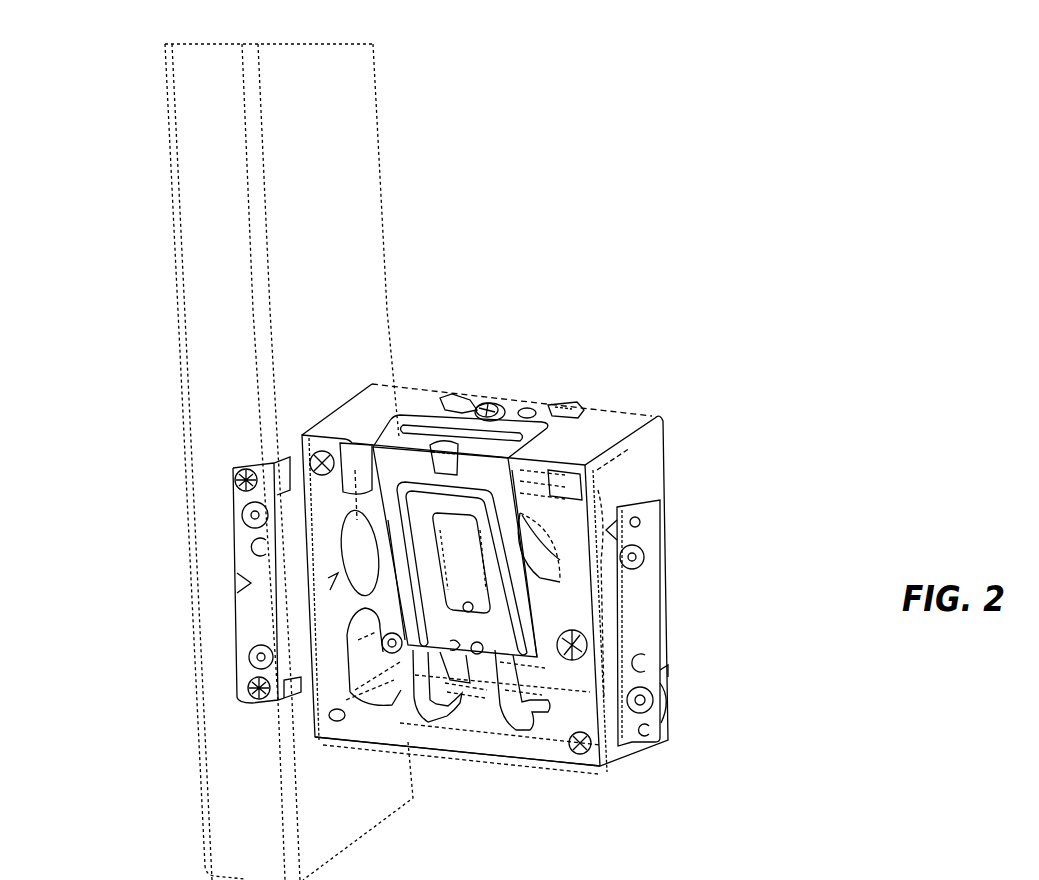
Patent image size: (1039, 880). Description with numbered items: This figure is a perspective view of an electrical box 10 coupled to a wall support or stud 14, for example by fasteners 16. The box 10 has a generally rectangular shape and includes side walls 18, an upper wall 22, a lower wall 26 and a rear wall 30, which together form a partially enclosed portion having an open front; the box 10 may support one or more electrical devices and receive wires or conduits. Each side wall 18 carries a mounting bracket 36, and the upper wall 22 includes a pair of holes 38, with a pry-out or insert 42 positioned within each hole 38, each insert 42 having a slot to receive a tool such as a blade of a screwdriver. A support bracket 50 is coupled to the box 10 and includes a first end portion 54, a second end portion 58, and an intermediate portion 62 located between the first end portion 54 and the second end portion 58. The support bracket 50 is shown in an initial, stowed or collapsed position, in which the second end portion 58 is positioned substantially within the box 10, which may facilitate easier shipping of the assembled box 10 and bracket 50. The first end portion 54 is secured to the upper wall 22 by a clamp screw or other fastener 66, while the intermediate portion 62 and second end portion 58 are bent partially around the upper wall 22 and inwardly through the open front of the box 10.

The electrical box 10 is at (737, 468).
The wall support or stud 14 is at (363, 204).
The fasteners 16 is at (239, 472).
The side walls 18 is at (320, 496).
The upper wall 22 is at (618, 412).
The lower wall 26 is at (492, 767).
The rear wall 30 is at (565, 515).
The mounting bracket 36 is at (245, 615).
The holes 38 is at (447, 402).
The pry-out or insert 42 is at (485, 406).
The support bracket 50 is at (448, 663).
The first end portion 54 is at (423, 415).
The second end portion 58 is at (525, 730).
The intermediate portion 62 is at (405, 578).
The clamp screw or other fastener 66 is at (497, 406).